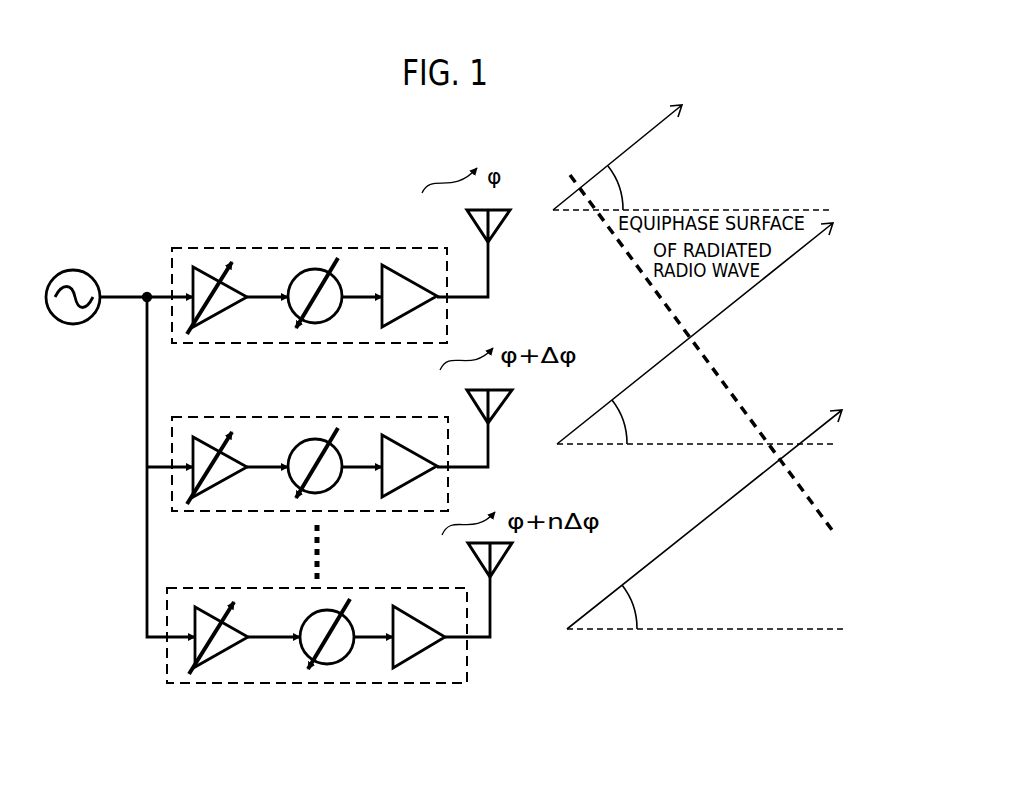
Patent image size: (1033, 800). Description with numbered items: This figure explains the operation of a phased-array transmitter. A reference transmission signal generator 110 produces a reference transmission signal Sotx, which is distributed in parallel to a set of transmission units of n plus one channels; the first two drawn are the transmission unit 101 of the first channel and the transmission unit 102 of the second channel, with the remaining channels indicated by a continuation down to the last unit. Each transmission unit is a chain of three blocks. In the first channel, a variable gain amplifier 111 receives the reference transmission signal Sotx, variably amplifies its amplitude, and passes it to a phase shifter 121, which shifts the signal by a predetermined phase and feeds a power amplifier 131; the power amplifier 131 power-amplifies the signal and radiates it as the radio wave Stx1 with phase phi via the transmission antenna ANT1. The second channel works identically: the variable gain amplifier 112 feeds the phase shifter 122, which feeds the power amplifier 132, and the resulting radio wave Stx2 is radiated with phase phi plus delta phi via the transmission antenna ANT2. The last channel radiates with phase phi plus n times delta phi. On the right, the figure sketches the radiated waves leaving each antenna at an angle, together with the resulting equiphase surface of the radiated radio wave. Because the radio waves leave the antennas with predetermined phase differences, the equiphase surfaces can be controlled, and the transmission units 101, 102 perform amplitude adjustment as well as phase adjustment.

The reference transmission signal generator 110 is at (89, 268).
The transmission unit 101 is at (265, 248).
The transmission unit 102 is at (297, 512).
The variable gain amplifier 111 is at (203, 268).
The variable gain amplifier 112 is at (218, 483).
The phase shifter 121 is at (316, 268).
The phase shifter 122 is at (335, 488).
The power amplifier 131 is at (384, 265).
The power amplifier 132 is at (412, 480).
The transmission antenna ANT1 is at (505, 231).
The transmission antenna ANT2 is at (505, 411).
The radio wave Stx1 is at (467, 300).
The radio wave Stx2 is at (468, 470).
The reference transmission signal Sotx is at (143, 448).